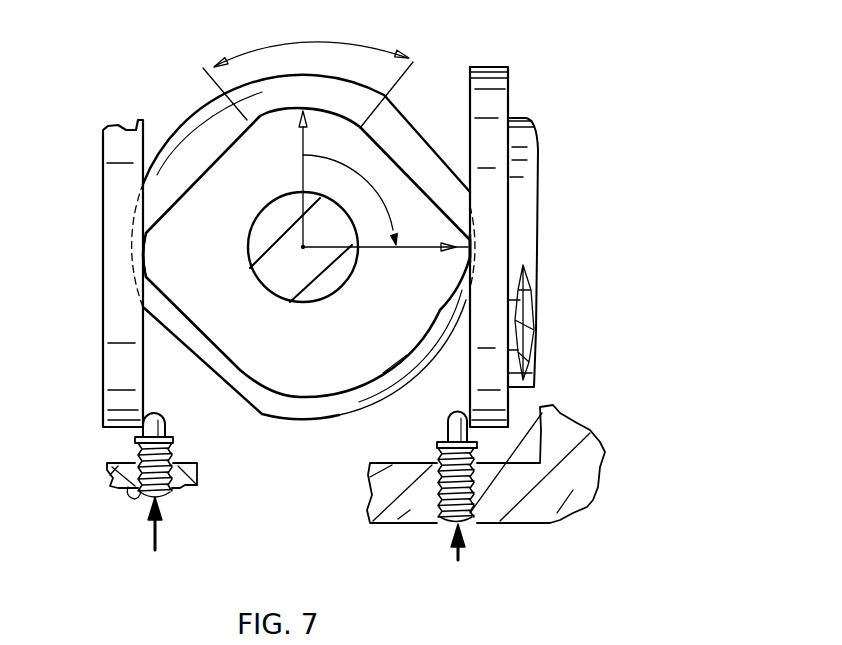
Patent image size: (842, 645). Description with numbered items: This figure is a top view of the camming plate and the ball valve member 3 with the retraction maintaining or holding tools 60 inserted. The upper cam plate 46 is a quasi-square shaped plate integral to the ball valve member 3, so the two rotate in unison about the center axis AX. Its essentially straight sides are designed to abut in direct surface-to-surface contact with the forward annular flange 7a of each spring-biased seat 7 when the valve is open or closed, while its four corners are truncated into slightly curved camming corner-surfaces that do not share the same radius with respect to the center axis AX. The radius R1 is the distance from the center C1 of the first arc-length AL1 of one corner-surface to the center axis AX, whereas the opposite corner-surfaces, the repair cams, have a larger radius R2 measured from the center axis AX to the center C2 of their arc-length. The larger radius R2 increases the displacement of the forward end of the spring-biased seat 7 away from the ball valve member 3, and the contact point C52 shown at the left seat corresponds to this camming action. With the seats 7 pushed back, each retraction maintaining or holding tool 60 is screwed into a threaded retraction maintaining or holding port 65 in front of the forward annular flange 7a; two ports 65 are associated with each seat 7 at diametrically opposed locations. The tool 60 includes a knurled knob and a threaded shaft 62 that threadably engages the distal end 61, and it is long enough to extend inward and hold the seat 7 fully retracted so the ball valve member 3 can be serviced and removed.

The ball valve member 3 is at (325, 402).
The upper cam plate 46 is at (204, 278).
The center axis AX is at (303, 247).
The radius R1 is at (302, 180).
The radius R2 is at (417, 257).
The center of the arc-length AL1 C1 is at (308, 112).
The center of the arc-length AL2 C2 is at (468, 248).
The contact point C52 is at (148, 230).
The first arc-length AL1 is at (295, 43).
The spring-biased seat 7 is at (103, 262).
The forward annular flange 7a is at (493, 98).
The distal end 61 is at (165, 425).
The threaded shaft 62 is at (163, 492).
The threaded retraction maintaining or holding port 65 is at (173, 495).
The retraction maintaining or holding tool 60 is at (126, 501).